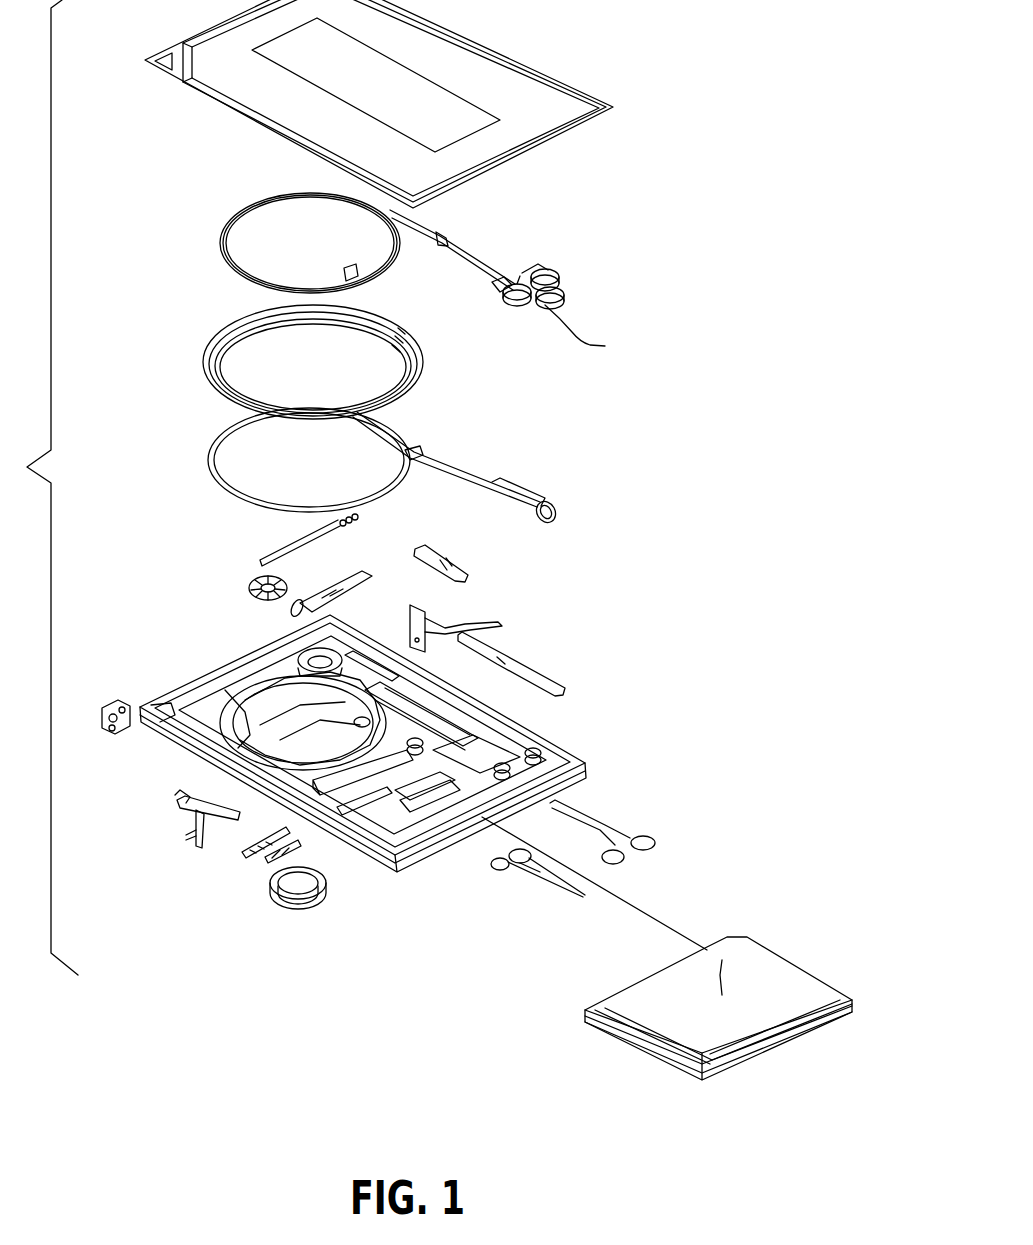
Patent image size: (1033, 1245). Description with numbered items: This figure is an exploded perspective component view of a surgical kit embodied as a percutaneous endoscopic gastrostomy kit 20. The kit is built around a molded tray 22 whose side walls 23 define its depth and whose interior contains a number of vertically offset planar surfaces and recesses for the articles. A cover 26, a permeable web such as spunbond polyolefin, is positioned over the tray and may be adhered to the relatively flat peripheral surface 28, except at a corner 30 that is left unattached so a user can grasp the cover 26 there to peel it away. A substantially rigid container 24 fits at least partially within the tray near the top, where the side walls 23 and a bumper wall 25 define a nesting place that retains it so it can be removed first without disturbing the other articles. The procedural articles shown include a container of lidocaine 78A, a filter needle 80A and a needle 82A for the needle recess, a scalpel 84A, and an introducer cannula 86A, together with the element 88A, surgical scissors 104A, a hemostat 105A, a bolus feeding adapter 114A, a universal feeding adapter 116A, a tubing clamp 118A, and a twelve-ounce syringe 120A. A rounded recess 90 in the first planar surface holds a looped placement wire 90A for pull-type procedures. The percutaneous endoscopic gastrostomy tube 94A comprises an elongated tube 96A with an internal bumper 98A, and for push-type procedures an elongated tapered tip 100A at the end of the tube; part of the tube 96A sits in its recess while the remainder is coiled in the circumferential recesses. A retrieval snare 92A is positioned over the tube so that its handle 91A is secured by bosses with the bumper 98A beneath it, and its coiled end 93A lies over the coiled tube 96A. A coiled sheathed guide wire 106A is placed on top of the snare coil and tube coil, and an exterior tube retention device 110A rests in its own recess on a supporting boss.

The PEG kit 20 is at (662, 551).
The tray 22 is at (458, 850).
The side walls 23 is at (275, 795).
The container 24 is at (755, 968).
The bumper wall 25 is at (520, 808).
The cover 26 is at (515, 85).
The peripheral surface 28 is at (545, 722).
The corner 30 is at (152, 718).
The container of lidocaine 78A is at (455, 556).
The filter needle 80A is at (243, 852).
The needle 82A is at (262, 862).
The scalpel 84A is at (545, 670).
The introducer cannula 86A is at (268, 556).
The needle hub 88A is at (356, 536).
The recess 90 is at (395, 850).
The looped placement wire 90A is at (280, 900).
The handle 91A is at (540, 268).
The retrieval snare 92A is at (594, 331).
The coiled end 93A is at (240, 218).
The percutaneous endoscopic gastrostomy tube 94A is at (498, 480).
The elongated tube 96A is at (432, 452).
The bumper 98A is at (538, 514).
The elongated tapered tip 100A is at (362, 427).
The surgical scissors 104A is at (565, 890).
The hemostat 105A is at (622, 860).
The coiled sheathed guide wire 106A is at (238, 316).
The exterior tube retention device 110A is at (248, 592).
The bolus feeding adapter 114A is at (462, 622).
The universal feeding adapter 116A is at (190, 818).
The tubing clamp 118A is at (118, 702).
The syringe 120A is at (292, 612).